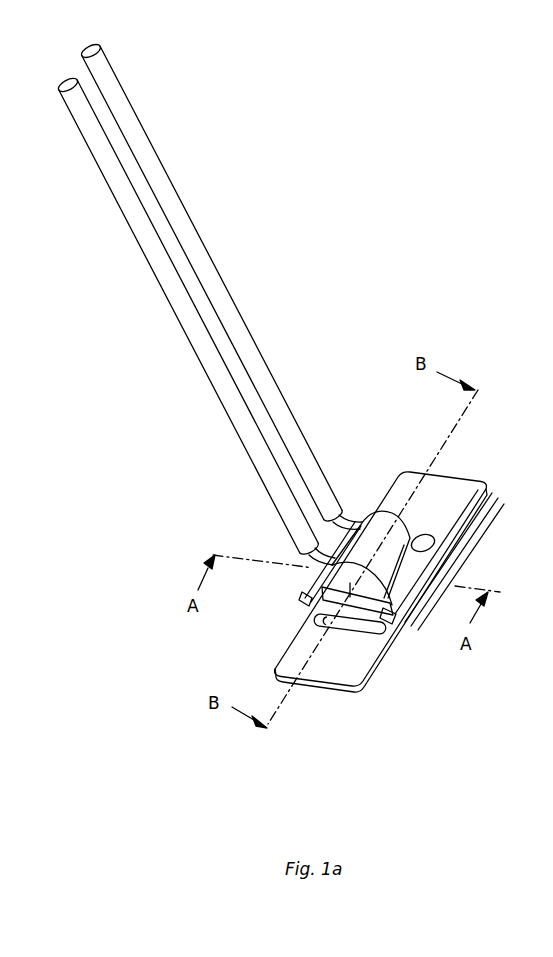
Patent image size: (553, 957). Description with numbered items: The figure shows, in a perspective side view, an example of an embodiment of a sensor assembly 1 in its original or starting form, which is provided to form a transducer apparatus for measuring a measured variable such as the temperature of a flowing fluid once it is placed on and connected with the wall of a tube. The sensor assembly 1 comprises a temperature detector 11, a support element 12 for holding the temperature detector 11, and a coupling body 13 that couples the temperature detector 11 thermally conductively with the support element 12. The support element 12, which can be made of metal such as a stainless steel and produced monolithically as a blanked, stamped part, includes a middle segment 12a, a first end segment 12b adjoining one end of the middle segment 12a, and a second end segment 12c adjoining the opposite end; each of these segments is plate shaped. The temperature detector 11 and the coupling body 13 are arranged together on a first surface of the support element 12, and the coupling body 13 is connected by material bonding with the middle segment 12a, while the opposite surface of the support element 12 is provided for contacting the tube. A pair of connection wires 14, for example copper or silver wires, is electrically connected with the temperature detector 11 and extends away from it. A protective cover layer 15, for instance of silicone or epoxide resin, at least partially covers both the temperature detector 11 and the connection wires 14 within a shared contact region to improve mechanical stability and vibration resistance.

The sensor assembly 1 is at (329, 433).
The temperature detector 11 is at (407, 553).
The support element 12 is at (363, 666).
The middle segment 12a is at (410, 615).
The first end segment 12b is at (322, 675).
The second end segment 12c is at (412, 470).
The coupling body 13 is at (330, 605).
The connection wires 14 is at (262, 388).
The protective cover layer 15 is at (366, 525).